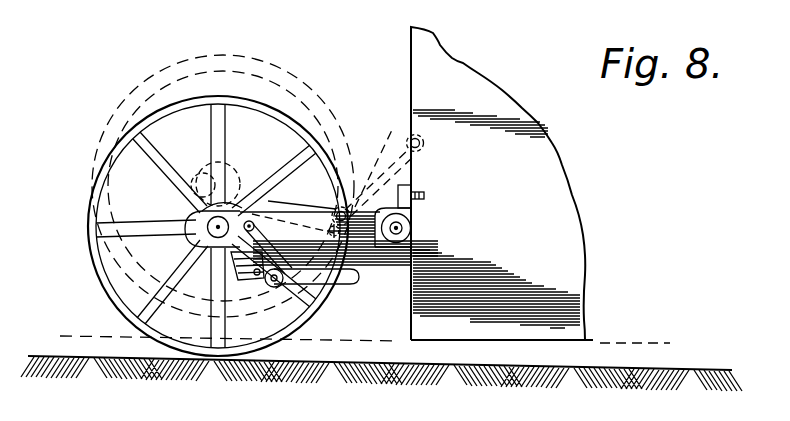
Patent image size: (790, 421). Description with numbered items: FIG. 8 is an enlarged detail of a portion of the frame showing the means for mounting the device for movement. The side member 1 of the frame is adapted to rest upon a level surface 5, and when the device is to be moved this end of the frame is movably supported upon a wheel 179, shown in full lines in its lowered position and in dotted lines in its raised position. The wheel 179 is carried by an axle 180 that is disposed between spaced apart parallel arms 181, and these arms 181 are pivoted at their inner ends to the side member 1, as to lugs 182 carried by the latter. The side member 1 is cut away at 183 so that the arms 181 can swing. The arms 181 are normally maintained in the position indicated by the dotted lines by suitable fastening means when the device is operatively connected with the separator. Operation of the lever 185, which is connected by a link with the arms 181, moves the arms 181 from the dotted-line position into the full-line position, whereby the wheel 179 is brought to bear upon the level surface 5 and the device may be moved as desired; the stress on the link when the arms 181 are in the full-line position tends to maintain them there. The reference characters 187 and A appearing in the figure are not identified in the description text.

The wheels 179 is at (282, 62).
The axle 180 is at (229, 188).
The arms 181 is at (320, 214).
The lugs 182 is at (413, 244).
The cut away portion 183 is at (348, 277).
The lever 185 is at (273, 297).
The arm 187 is at (384, 168).
The vehicle body A is at (588, 270).
The side member 1 is at (585, 304).
The level surface 5 is at (470, 364).